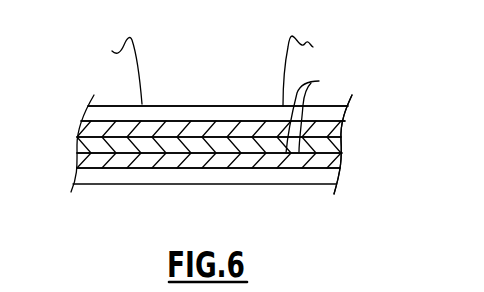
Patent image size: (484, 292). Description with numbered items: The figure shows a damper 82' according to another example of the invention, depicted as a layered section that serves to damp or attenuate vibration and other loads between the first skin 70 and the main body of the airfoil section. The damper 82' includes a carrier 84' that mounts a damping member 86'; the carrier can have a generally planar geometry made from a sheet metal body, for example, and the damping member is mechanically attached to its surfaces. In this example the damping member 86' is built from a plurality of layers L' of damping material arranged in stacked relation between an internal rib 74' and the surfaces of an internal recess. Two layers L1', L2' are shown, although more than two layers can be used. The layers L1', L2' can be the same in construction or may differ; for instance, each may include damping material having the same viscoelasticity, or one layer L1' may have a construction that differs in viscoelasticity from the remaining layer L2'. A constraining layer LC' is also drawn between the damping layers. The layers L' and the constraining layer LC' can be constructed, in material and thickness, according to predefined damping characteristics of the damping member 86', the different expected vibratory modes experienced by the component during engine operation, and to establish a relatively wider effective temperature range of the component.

The first skin 70 is at (305, 177).
The internal rib 74' is at (239, 69).
The damper 82' is at (368, 129).
The carrier 84' is at (214, 92).
The damping member 86' is at (201, 115).
The layers of damping material L' is at (314, 109).
The first layer L1' is at (209, 178).
The constraining layer LC' is at (209, 186).
The second layer L2' is at (208, 194).